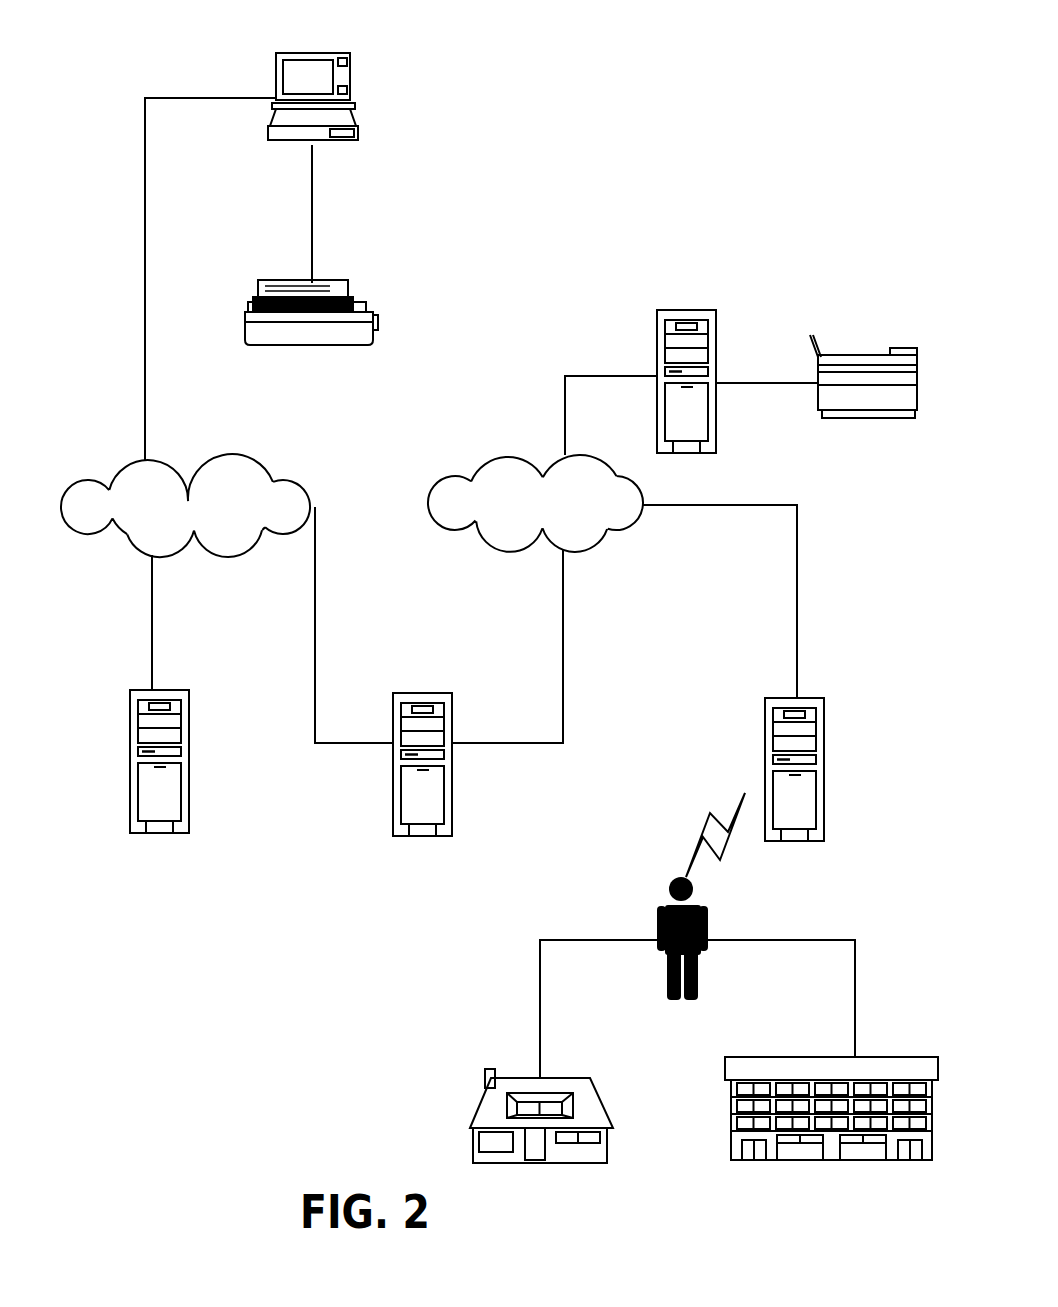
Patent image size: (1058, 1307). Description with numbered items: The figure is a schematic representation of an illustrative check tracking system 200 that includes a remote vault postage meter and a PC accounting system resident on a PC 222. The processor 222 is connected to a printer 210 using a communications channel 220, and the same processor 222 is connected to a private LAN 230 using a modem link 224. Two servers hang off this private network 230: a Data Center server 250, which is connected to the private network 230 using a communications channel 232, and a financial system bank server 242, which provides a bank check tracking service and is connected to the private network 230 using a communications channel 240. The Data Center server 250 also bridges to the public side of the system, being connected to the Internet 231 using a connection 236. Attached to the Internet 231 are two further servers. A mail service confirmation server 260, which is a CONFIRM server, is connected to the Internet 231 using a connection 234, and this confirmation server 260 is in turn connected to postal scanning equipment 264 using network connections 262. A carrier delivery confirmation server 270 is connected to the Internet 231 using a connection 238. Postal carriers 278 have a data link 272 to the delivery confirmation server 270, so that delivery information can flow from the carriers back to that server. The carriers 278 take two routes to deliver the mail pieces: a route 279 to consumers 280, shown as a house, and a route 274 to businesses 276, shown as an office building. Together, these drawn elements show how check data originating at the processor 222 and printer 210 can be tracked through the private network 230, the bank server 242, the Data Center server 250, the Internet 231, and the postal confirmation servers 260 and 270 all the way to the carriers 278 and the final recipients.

The check tracking system 200 is at (690, 97).
The printer 210 is at (317, 353).
The communications channel 220 is at (308, 213).
The PC 222 is at (348, 145).
The modem link 224 is at (145, 213).
The private LAN 230 is at (185, 505).
The Internet 231 is at (535, 503).
The communications channel 232 is at (318, 660).
The connection 234 is at (590, 375).
The connection 236 is at (568, 580).
The connection 238 is at (801, 543).
The communications channel 240 is at (160, 594).
The financial system bank server 242 is at (190, 747).
The Data Center server 250 is at (447, 727).
The mail service confirmation server 260 is at (762, 293).
The network connections 262 is at (767, 398).
The postal scanning equipment 264 is at (878, 355).
The carrier delivery confirmation server 270 is at (755, 730).
The data link 272 is at (700, 823).
The route 274 is at (800, 940).
The businesses 276 is at (895, 1062).
The postal carriers 278 is at (655, 905).
The route 279 is at (540, 960).
The consumers 280 is at (520, 1078).